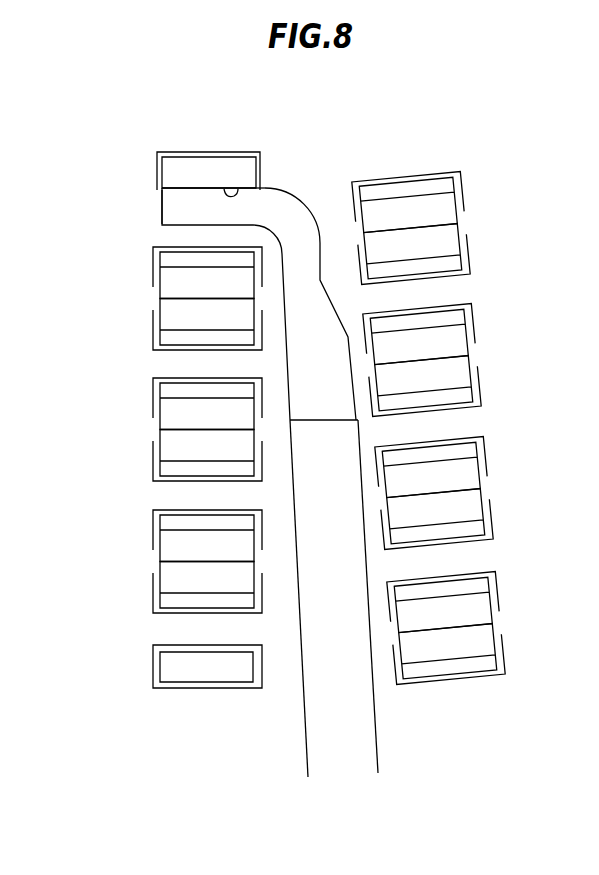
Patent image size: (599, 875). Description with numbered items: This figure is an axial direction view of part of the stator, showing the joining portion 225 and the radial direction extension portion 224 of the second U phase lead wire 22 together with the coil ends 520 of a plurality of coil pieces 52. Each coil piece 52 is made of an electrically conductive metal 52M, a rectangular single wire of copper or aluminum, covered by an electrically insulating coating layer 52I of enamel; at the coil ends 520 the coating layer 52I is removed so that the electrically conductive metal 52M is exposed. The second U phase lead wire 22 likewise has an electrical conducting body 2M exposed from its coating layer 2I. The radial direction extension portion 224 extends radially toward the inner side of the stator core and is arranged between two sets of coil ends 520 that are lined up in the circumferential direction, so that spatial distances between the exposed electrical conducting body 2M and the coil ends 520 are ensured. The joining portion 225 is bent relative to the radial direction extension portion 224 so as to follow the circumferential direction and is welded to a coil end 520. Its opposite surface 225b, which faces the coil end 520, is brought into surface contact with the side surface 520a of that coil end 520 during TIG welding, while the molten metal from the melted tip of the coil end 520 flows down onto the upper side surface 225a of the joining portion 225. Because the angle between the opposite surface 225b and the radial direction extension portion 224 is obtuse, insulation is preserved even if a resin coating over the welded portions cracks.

The second U phase lead wire 22 is at (281, 768).
The radial direction extension portion 224 is at (378, 735).
The joining portion 225 is at (238, 215).
The upper side surface 225a is at (178, 198).
The opposite surface 225b is at (197, 185).
The electrical conducting body 2M is at (332, 398).
The coating layer 2I is at (355, 437).
The coil piece 52 is at (137, 166).
The electrically conductive metal 52M is at (157, 165).
The electrically insulating coating layer 52I is at (162, 180).
The coil end 520 is at (172, 163).
The side surface 520a is at (236, 191).